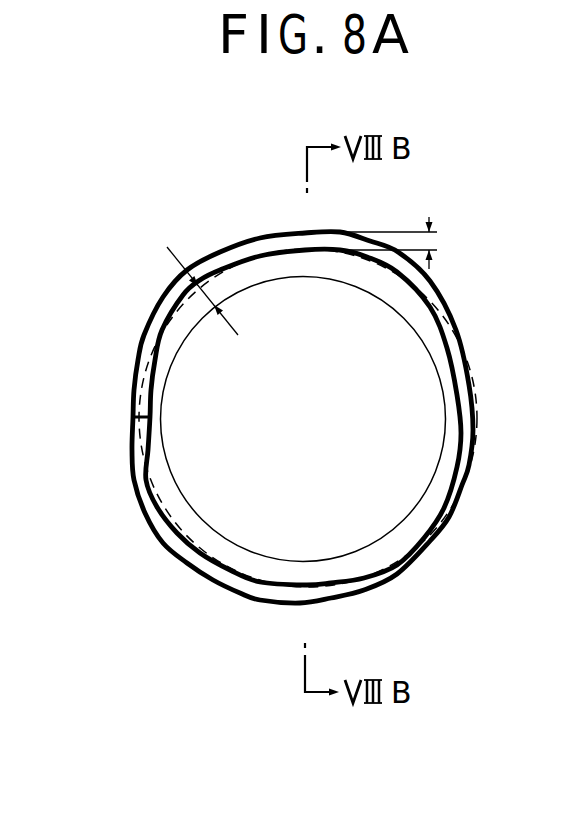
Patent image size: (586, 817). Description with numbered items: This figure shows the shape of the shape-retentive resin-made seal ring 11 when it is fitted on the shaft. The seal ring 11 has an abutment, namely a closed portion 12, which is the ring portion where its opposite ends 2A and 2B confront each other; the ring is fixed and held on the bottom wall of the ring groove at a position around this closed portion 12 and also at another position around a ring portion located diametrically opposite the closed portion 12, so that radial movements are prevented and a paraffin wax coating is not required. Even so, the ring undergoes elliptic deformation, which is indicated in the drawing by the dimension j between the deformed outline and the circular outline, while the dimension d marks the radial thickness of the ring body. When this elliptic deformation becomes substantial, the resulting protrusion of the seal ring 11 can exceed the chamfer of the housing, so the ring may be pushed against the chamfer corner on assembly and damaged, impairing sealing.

The seal ring 11 is at (333, 595).
The closed portion 12 is at (128, 417).
The opposite end 2A is at (158, 410).
The opposite end 2B is at (133, 428).
The radial thickness dimension d is at (222, 305).
The offset dimension j is at (393, 243).